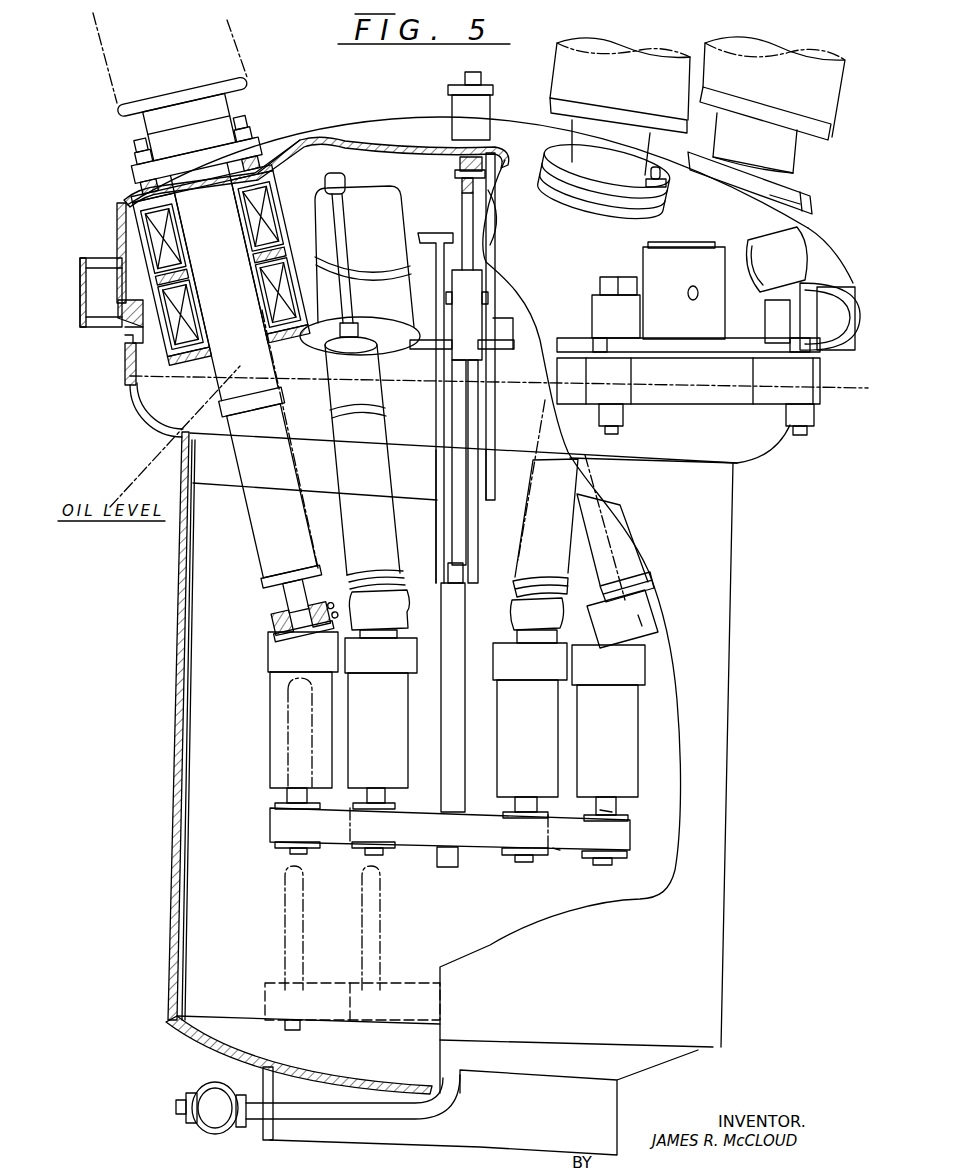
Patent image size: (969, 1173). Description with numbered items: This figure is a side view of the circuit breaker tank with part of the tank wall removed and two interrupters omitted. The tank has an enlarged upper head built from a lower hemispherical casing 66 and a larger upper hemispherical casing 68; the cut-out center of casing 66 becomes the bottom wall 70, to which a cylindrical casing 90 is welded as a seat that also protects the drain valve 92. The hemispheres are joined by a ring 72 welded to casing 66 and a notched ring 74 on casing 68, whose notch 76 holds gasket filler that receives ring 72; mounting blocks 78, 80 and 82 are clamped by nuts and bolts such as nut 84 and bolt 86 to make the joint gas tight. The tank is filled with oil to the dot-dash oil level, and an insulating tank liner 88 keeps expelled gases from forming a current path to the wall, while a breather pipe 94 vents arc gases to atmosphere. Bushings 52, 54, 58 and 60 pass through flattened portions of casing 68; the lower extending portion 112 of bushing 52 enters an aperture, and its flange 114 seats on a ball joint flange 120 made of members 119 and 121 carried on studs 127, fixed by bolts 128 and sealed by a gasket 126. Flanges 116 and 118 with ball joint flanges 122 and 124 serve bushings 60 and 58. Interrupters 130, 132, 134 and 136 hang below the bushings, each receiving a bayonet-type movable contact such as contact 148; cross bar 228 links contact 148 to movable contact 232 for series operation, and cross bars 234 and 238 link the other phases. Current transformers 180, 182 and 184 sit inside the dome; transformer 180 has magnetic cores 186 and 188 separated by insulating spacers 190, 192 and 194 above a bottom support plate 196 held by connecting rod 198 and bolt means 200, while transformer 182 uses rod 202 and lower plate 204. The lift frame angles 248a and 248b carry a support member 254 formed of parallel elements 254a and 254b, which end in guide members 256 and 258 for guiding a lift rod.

The bushing 52 is at (184, 82).
The bushing 54 is at (375, 434).
The bushing 58 is at (772, 78).
The bushing 60 is at (622, 72).
The lower hemispherical casing 66 is at (150, 422).
The upper hemispherical casing 68 is at (356, 147).
The bottom wall 70 is at (225, 1050).
The ring 72 is at (125, 360).
The notched ring 74 is at (133, 310).
The notch 76 is at (145, 339).
The mounting block 78 is at (615, 388).
The mounting block 80 is at (768, 386).
The mounting block 82 is at (603, 305).
The nut 84 is at (601, 414).
The bolt 86 is at (618, 284).
The tank liner 88 is at (190, 816).
The cylindrical casing 90 is at (617, 1118).
The drain valve 92 is at (222, 1112).
The breather pipe 94 is at (822, 256).
The lower extending portion 112 is at (258, 524).
The flange 114 is at (133, 172).
The flange 116 is at (666, 192).
The flange 118 is at (792, 202).
The member 119 is at (143, 198).
The ball joint flange 120 is at (251, 160).
The member 121 is at (140, 186).
The ball joint flange 122 is at (582, 206).
The ball joint flange 124 is at (800, 212).
The gasket 126 is at (158, 178).
The stud 127 is at (135, 138).
The bolt 128 is at (137, 150).
The interrupter 130 is at (280, 708).
The interrupter 132 is at (398, 788).
The interrupter 134 is at (620, 760).
The interrupter 136 is at (493, 780).
The movable contact 148 is at (283, 795).
The current transformer 180 is at (140, 260).
The current transformer 182 is at (386, 231).
The current transformer 184 is at (550, 319).
The magnetic core 186 is at (170, 238).
The magnetic core 188 is at (190, 310).
The first insulating spacer 190 is at (122, 222).
The second insulating spacer 192 is at (186, 278).
The third insulating spacer 194 is at (170, 362).
The bottom support plate 196 is at (230, 380).
The connecting rod 198 is at (273, 243).
The bolt means 200 is at (338, 326).
The rod 202 is at (342, 280).
The lower plate 204 is at (386, 332).
The cross bar 228 is at (283, 1013).
The movable contact 232 is at (612, 812).
The cross bar 234 is at (553, 848).
The cross bar 238 is at (407, 1013).
The angle 248a is at (450, 238).
The angle 248b is at (494, 287).
The support member 254 is at (463, 621).
The element 254a is at (444, 450).
The element 254b is at (486, 492).
The guide member 256 is at (440, 546).
The guide member 258 is at (478, 548).